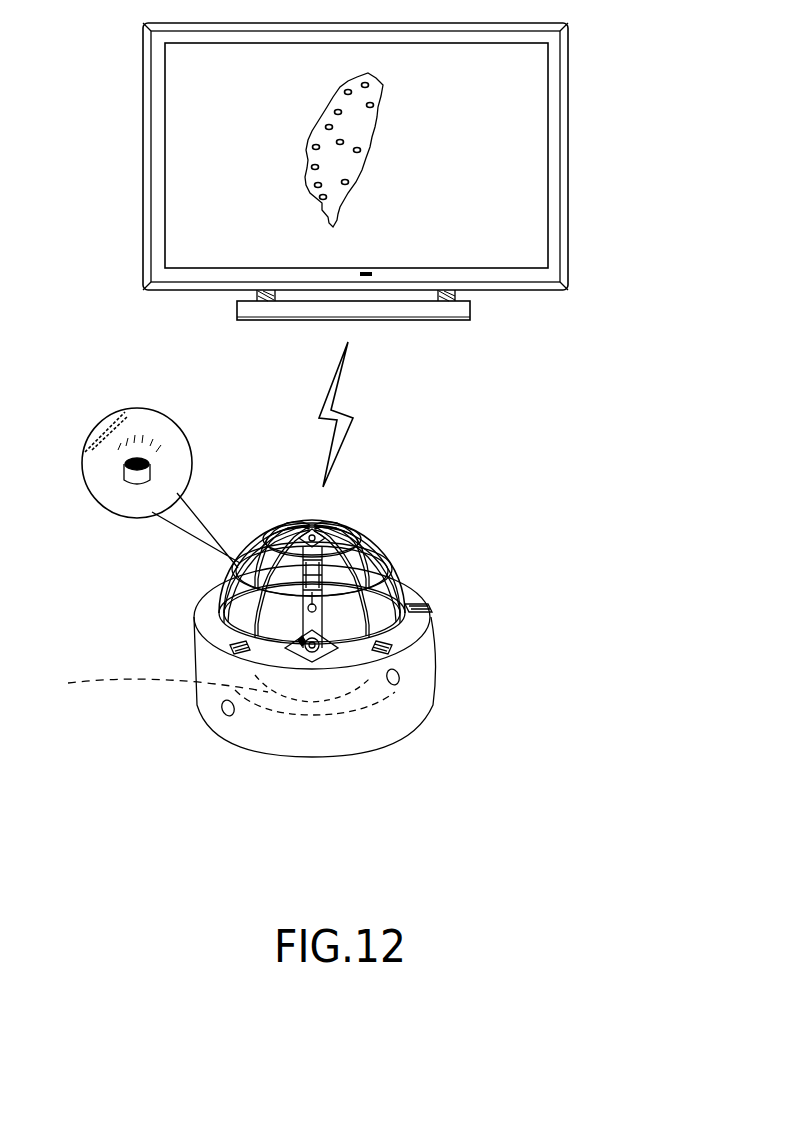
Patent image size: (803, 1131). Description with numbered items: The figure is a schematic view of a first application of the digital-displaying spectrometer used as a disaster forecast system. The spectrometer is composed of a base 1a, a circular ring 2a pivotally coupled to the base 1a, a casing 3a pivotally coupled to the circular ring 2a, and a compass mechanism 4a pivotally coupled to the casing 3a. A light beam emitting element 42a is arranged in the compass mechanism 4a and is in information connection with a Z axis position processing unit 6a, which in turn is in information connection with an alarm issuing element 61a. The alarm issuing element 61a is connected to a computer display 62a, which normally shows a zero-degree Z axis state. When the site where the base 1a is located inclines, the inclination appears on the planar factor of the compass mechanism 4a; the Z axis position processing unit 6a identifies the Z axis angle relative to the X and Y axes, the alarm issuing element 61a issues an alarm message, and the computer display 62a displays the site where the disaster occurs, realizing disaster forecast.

The base 1a is at (428, 687).
The circular ring 2a is at (425, 608).
The casing 3a is at (149, 683).
The compass mechanism 4a is at (385, 597).
The light beam emitting element 42a is at (120, 460).
The Z axis position processing unit 6a is at (300, 637).
The alarm issuing element 61a is at (296, 641).
The computer display 62a is at (566, 155).